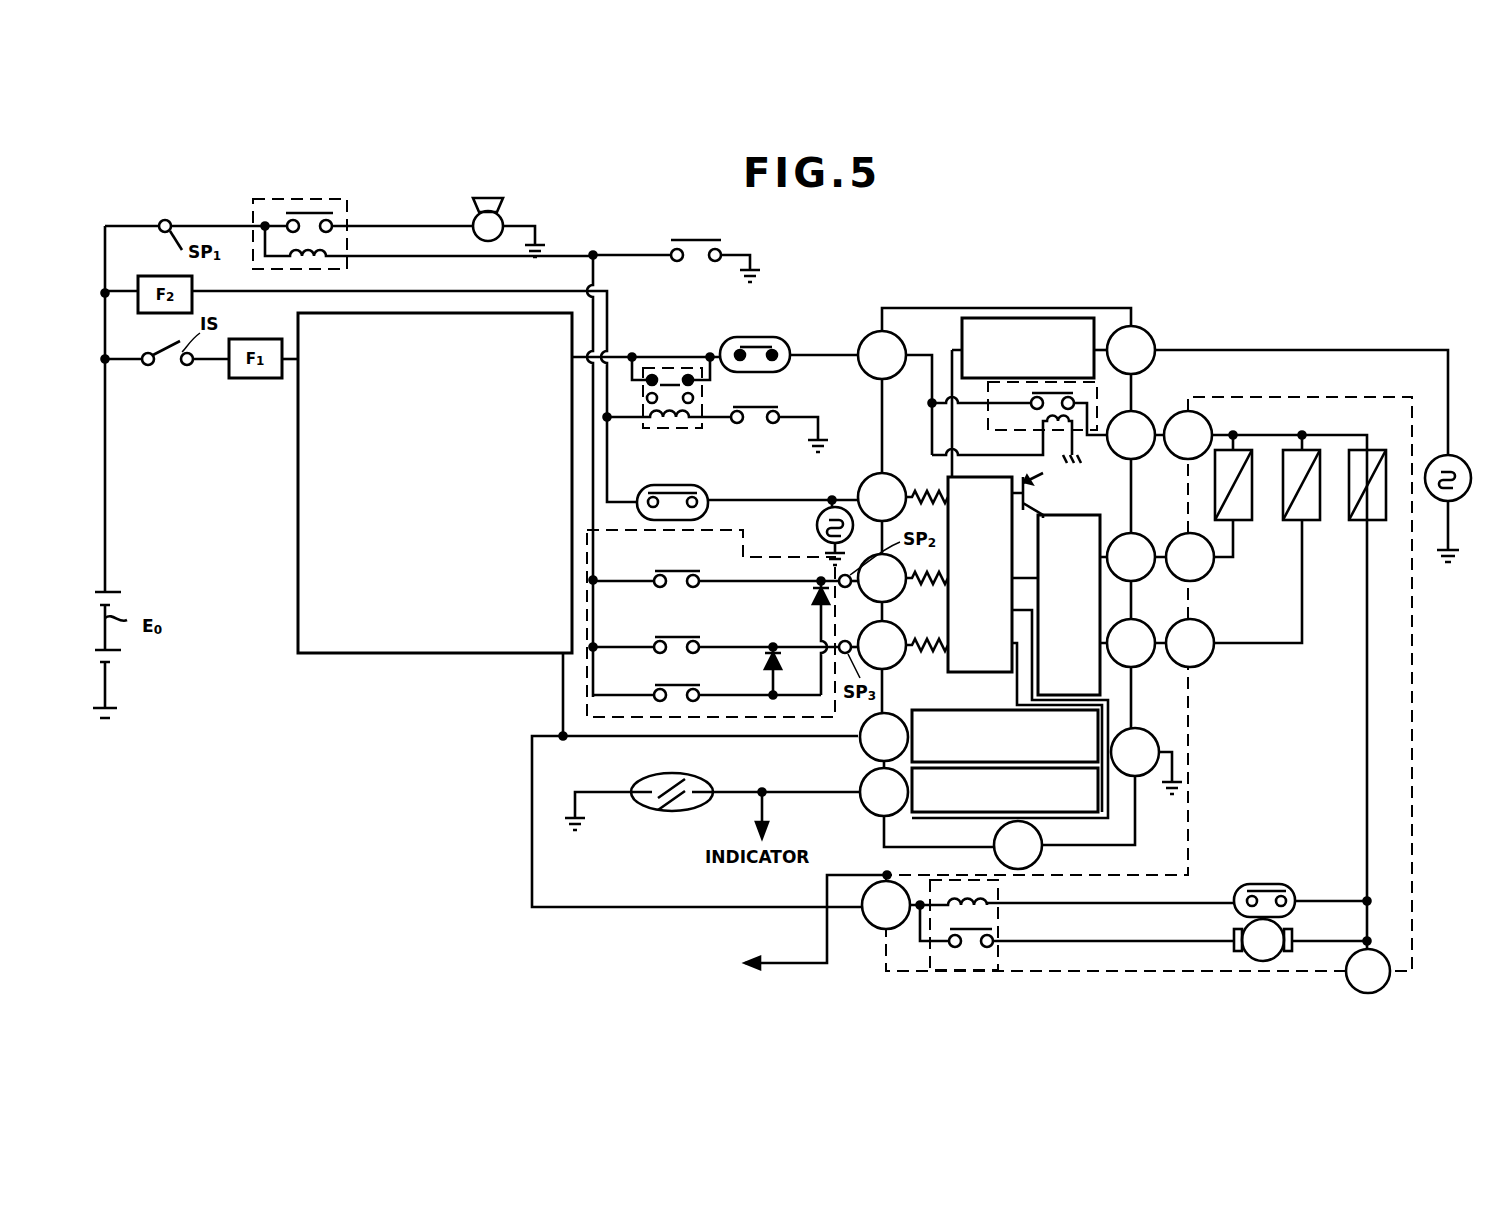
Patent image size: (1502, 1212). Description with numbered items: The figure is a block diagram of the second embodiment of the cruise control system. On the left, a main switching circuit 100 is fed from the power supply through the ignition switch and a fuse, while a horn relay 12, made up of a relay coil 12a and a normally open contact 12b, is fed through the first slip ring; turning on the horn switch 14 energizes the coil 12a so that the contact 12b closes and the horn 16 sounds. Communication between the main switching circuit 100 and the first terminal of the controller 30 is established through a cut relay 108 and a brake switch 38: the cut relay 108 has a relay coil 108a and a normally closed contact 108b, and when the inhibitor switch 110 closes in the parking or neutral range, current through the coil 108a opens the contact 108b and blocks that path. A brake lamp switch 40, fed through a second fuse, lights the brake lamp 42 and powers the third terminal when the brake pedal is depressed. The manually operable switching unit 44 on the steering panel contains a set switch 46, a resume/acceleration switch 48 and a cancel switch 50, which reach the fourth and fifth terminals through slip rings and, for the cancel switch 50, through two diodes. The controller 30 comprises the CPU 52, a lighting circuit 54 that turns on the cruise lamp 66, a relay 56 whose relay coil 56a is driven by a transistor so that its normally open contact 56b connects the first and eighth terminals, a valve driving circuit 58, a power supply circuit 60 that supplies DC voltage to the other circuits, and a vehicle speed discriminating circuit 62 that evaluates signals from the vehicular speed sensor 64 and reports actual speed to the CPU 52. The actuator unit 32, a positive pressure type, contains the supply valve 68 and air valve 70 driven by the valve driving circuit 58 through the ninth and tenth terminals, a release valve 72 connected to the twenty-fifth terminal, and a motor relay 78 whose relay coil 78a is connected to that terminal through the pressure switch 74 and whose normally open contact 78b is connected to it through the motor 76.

The horn relay 12 is at (391, 221).
The relay coil 12a is at (334, 256).
The normally open contact 12b is at (332, 216).
The horn switch 14 is at (686, 240).
The horn 16 is at (490, 199).
The controller 30 is at (892, 308).
The actuator unit 32 is at (991, 709).
The brake switch 38 is at (744, 337).
The brake lamp switch 40 is at (646, 482).
The brake lamp 42 is at (817, 525).
The manually operable switching unit 44 is at (702, 652).
The set switch 46 is at (652, 578).
The resume/acceleration switch 48 is at (652, 644).
The cancel switch 50 is at (652, 693).
The CPU 52 is at (986, 672).
The lighting circuit 54 is at (1060, 318).
The relay 56 is at (1002, 437).
The relay coil 56a is at (1045, 420).
The normally open contact 56b is at (1035, 390).
The valve driving circuit 58 is at (1064, 518).
The power supply circuit 60 is at (916, 710).
The vehicle speed discriminating circuit 62 is at (960, 812).
The vehicular speed sensor 64 is at (659, 778).
The cruise lamp 66 is at (1444, 458).
The supply valve 68 is at (1243, 522).
The air valve 70 is at (1308, 522).
The release valve 72 is at (1373, 522).
The pressure switch 74 is at (1243, 884).
The motor 76 is at (1264, 962).
The motor relay 78 is at (999, 946).
The relay coil 78a is at (986, 900).
The normally open contact 78b is at (993, 928).
The main switching circuit 100 is at (298, 440).
The cut relay 108 is at (695, 387).
The relay coil 108a is at (694, 412).
The normally closed contact 108b is at (668, 378).
The inhibitor switch 110 is at (786, 405).